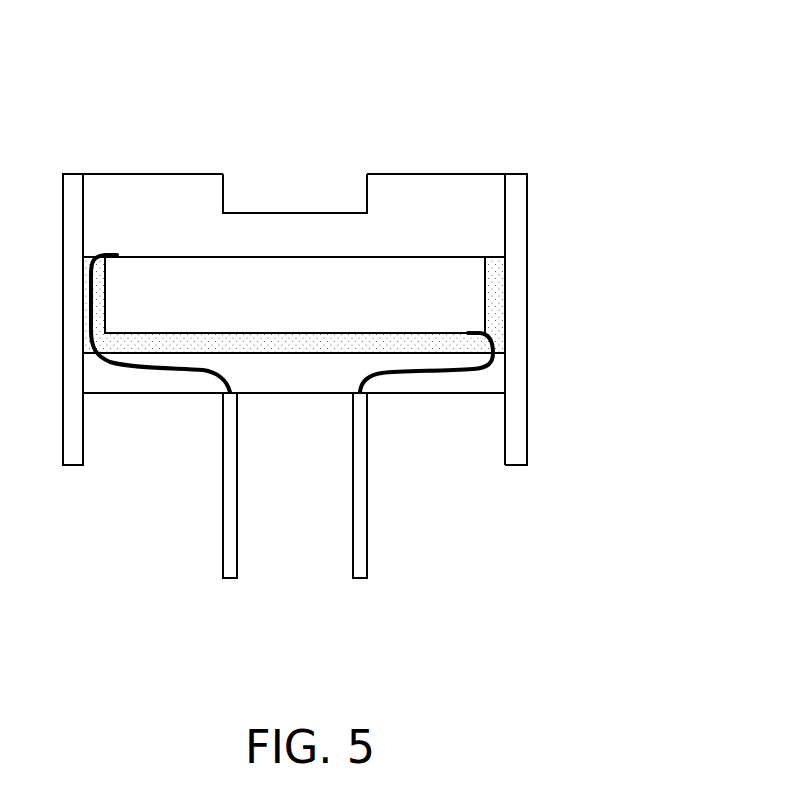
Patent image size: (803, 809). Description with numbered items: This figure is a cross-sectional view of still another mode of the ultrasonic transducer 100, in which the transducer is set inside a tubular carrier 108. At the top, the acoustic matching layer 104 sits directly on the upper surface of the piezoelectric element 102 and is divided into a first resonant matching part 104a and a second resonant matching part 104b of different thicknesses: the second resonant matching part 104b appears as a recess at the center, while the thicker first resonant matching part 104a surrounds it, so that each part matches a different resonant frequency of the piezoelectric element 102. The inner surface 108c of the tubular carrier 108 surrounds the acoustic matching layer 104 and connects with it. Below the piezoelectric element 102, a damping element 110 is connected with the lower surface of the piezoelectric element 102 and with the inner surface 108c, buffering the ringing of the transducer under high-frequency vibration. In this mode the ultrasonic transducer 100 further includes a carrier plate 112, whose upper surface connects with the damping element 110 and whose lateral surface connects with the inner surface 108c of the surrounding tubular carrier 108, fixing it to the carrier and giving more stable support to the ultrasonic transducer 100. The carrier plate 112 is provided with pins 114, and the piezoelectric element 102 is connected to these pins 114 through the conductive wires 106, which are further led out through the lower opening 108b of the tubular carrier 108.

The ultrasonic transducer 100 is at (422, 86).
The piezoelectric element 102 is at (315, 311).
The acoustic matching layer 104 is at (315, 248).
The first resonant matching part 104a is at (152, 184).
The second resonant matching part 104b is at (270, 212).
The conductive wires 106 is at (150, 369).
The tubular carrier 108 is at (517, 320).
The lower opening 108b is at (507, 468).
The inner surface 108c is at (507, 370).
The damping element 110 is at (497, 276).
The carrier plate 112 is at (433, 383).
The pins 114 is at (228, 530).